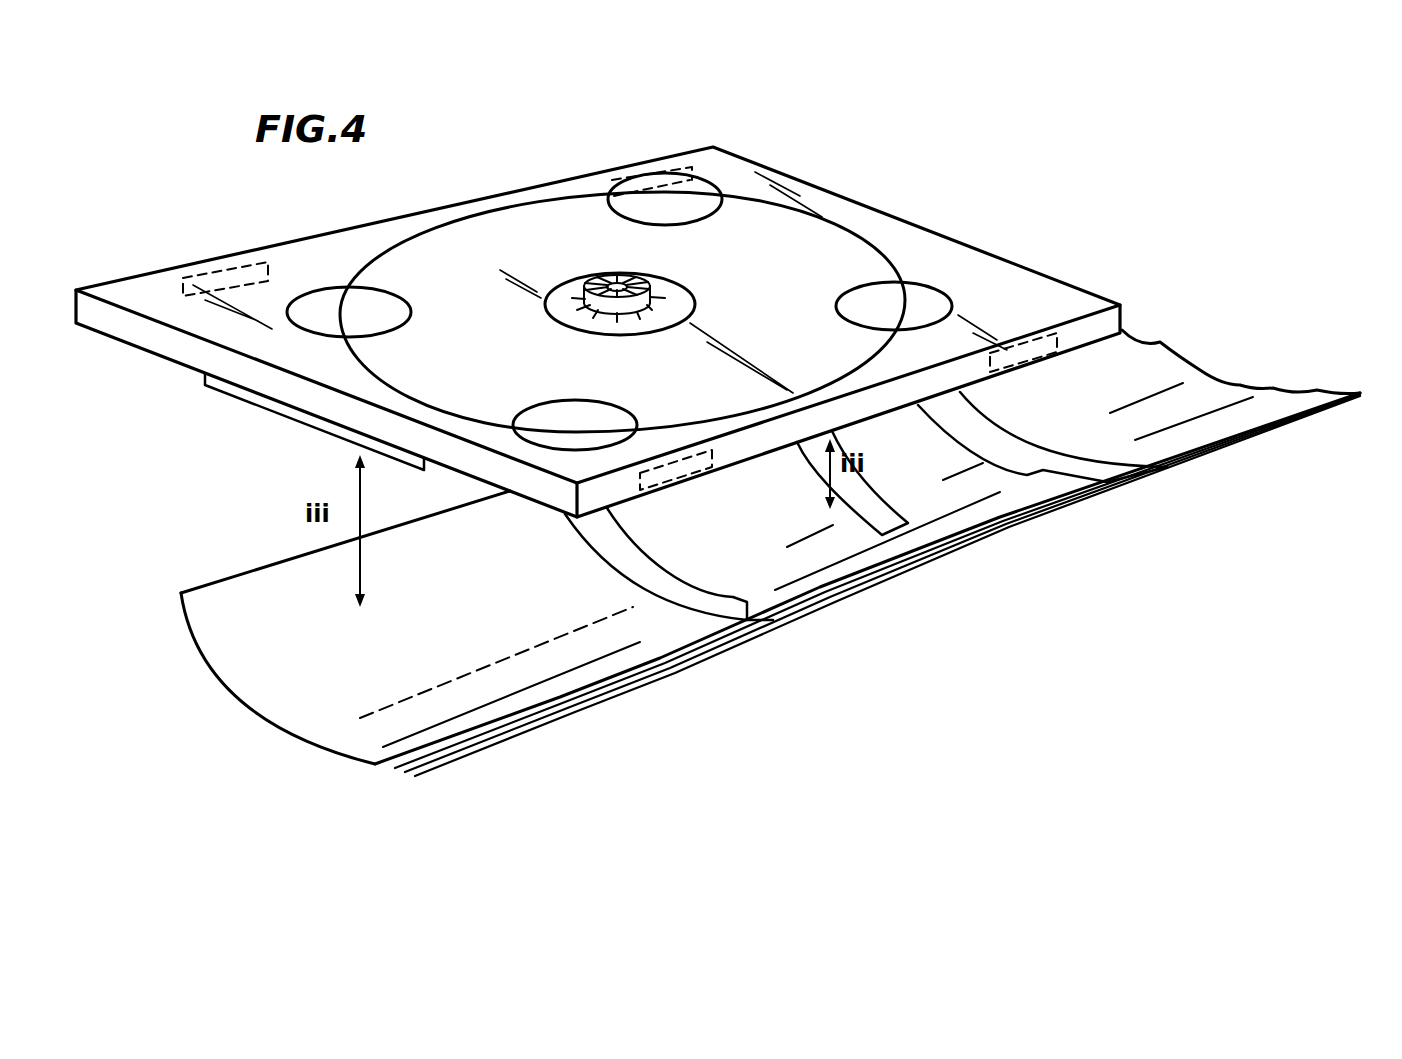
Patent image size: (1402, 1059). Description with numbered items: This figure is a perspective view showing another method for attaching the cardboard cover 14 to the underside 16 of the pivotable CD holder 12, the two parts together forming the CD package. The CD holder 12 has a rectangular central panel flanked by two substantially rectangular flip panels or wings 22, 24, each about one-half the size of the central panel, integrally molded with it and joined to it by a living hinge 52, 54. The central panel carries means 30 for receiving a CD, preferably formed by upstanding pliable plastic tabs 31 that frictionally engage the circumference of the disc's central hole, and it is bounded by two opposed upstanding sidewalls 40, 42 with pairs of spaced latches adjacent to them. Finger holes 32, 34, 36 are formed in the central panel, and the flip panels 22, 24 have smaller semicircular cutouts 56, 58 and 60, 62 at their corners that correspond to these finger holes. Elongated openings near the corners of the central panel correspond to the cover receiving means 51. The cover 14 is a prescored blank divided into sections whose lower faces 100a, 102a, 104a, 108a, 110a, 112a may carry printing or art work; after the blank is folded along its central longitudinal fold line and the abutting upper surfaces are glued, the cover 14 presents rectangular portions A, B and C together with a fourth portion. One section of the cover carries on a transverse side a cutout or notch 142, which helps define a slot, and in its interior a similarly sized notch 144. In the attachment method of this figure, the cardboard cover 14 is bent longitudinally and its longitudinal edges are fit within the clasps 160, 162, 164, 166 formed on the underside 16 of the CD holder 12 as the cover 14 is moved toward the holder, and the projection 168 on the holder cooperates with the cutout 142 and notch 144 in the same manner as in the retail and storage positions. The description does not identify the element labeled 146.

The CD holder 12 is at (906, 207).
The cover 14 is at (276, 797).
The underside 16 is at (882, 417).
The flip panel 22 is at (205, 272).
The flip panel 24 is at (585, 177).
The means for receiving the CD 30 is at (585, 315).
The upstanding pliable plastic tabs 31 is at (838, 306).
The finger hole 32 is at (394, 289).
The finger hole 34 is at (615, 400).
The finger hole 36 is at (634, 222).
The sidewall 40 is at (756, 447).
The sidewall 42 is at (128, 286).
The cover receiving means 51 is at (522, 520).
The living hinge 52 is at (148, 340).
The living hinge 54 is at (1130, 306).
The smaller semicircular cutout 56 is at (300, 322).
The smaller semicircular cutout 58 is at (578, 450).
The smaller semicircular cutout 60 is at (712, 205).
The smaller semicircular cutout 62 is at (950, 300).
The lower face of section 100 100a is at (250, 685).
The lower face of section 102 102a is at (855, 567).
The lower face of section 104 104a is at (1233, 432).
The lower face of section 108 108a is at (594, 700).
The lower face of section 110 110a is at (963, 555).
The lower face of section 112 112a is at (1345, 400).
The cutout or notch 142 is at (722, 595).
The notch 144 is at (876, 520).
The rolled edge 146 is at (697, 635).
The clasp 160 is at (683, 482).
The clasp 162 is at (268, 263).
The clasp 164 is at (1052, 358).
The clasp 166 is at (676, 162).
The projection 168 is at (238, 398).
The rectangular portion A is at (390, 752).
The rectangular portion B is at (1003, 520).
The rectangular portion C is at (1200, 370).